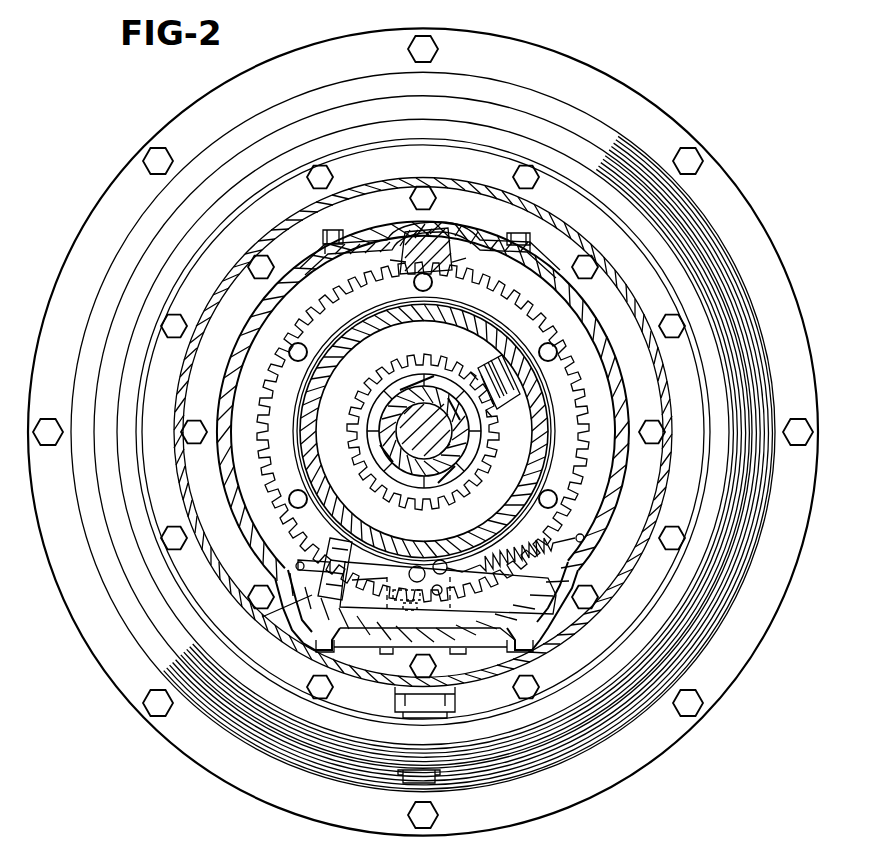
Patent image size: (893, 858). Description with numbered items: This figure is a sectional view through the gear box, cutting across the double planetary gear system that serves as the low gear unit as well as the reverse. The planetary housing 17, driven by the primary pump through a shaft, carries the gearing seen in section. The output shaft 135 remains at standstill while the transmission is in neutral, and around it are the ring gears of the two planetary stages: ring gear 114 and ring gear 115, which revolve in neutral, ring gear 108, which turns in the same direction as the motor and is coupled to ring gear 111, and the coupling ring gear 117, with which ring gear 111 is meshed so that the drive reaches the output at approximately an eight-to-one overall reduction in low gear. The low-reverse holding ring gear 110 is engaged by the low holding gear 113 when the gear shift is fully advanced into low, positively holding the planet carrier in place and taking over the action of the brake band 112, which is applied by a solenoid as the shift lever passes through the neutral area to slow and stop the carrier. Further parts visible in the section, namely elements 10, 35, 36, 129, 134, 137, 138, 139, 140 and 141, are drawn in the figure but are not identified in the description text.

The housing 10 is at (413, 780).
The planetary housing 17 is at (443, 703).
The outer ring 35 is at (93, 320).
The intermediate ring 36 is at (213, 297).
The ring gear 108 is at (375, 397).
The low-reverse holding ring gear 110 is at (270, 376).
The ring gear 111 is at (365, 440).
The brake band 112 is at (347, 328).
The low holding gear 113 is at (410, 268).
The ring gear 114 is at (330, 500).
The ring gear 115 is at (417, 503).
The coupling ring gear 117 is at (483, 374).
The link rod 129 is at (268, 617).
The shaft 134 is at (424, 431).
The output shaft 135 is at (410, 382).
The bracket 137 is at (358, 236).
The housing ring 138 is at (220, 383).
The actuator 139 is at (300, 562).
The base plate 140 is at (363, 640).
The lever 141 is at (462, 574).